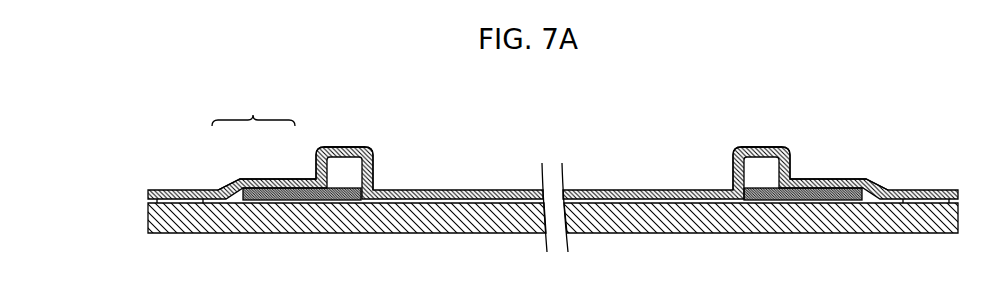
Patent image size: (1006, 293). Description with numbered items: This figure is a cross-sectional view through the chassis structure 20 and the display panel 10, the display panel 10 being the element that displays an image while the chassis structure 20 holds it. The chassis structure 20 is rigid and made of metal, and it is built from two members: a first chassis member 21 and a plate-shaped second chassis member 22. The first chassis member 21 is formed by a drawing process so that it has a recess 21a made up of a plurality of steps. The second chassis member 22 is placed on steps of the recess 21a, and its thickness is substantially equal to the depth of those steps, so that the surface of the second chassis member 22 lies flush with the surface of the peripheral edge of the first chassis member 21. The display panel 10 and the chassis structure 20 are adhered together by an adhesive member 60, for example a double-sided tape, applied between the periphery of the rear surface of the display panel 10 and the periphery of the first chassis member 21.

The display panel 10 is at (152, 211).
The chassis structure 20 is at (253, 107).
The first chassis member 21 is at (211, 190).
The recess 21a is at (286, 176).
The second chassis member 22 is at (258, 195).
The adhesive member 60 is at (147, 197).